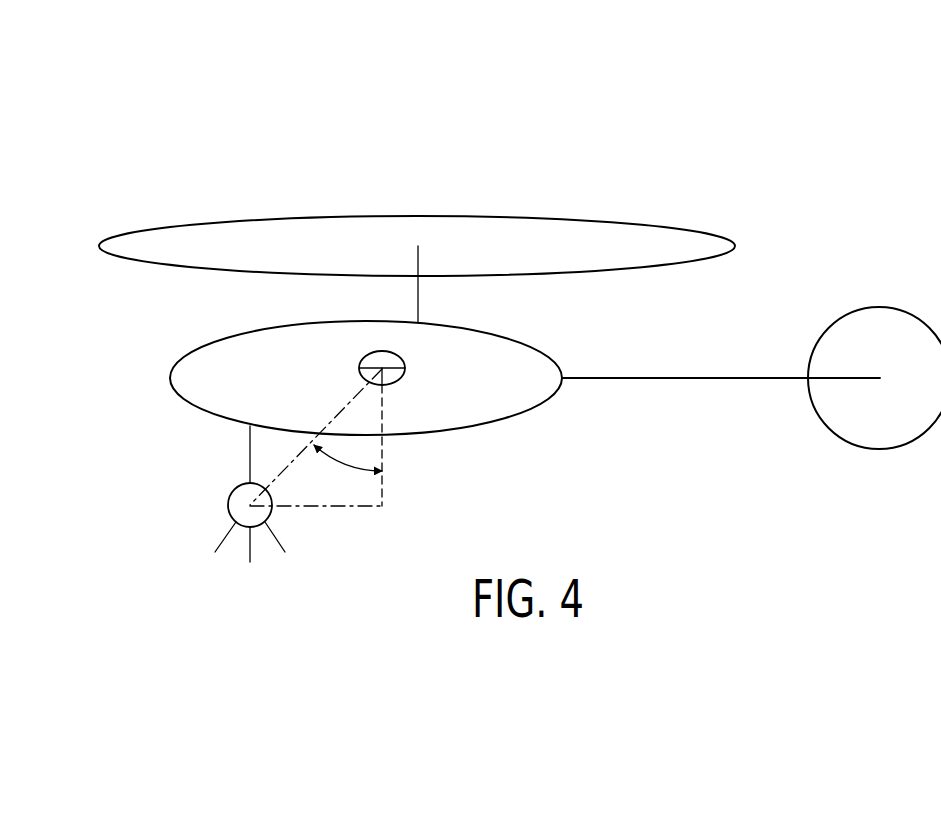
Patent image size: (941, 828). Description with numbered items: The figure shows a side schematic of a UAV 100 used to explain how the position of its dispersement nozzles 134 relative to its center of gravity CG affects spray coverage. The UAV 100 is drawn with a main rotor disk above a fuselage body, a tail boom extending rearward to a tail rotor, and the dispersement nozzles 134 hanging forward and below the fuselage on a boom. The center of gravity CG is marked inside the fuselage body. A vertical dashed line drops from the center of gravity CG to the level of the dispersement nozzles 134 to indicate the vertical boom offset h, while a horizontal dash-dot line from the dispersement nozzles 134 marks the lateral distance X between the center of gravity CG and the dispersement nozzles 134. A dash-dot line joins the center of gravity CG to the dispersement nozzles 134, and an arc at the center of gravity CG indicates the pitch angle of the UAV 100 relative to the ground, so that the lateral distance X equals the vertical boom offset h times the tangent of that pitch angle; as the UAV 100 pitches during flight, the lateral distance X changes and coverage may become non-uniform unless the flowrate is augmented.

The UAV 100 is at (481, 140).
The dispersement nozzles 134 is at (228, 504).
The center of gravity CG is at (397, 356).
The vertical boom offset h is at (384, 467).
The lateral distance X is at (316, 512).